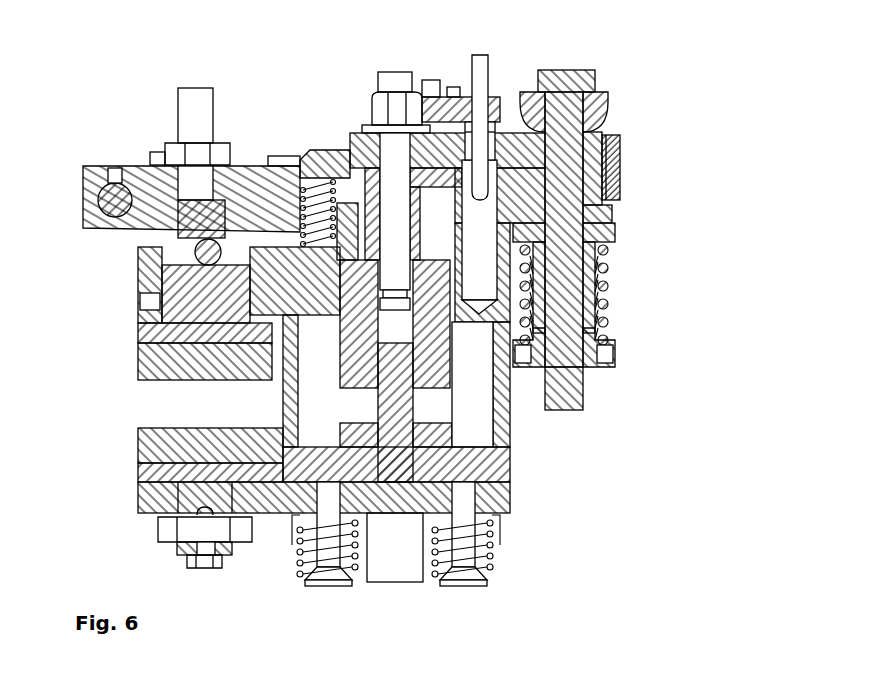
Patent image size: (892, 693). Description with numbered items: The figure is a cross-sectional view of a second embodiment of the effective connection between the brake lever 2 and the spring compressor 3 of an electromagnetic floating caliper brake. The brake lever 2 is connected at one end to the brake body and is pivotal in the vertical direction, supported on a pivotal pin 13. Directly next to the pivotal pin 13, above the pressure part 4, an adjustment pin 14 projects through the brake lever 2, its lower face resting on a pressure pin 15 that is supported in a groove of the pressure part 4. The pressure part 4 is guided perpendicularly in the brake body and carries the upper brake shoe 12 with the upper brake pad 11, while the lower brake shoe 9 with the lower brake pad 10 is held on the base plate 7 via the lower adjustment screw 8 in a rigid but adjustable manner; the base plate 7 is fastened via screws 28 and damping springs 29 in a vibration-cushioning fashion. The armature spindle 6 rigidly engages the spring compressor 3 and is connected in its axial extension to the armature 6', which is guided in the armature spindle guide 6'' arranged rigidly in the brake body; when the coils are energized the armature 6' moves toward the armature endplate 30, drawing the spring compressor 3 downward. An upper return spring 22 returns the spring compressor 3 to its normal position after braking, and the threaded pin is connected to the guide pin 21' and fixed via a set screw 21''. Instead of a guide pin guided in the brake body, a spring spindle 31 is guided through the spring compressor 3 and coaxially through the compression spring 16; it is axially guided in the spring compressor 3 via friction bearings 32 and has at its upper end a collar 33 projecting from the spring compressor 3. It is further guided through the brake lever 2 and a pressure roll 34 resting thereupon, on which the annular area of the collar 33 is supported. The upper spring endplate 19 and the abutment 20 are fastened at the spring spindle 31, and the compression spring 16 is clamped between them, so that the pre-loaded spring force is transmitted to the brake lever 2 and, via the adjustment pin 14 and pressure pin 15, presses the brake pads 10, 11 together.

The brake lever 2 is at (612, 158).
The spring compressor 3 is at (598, 178).
The pressure part 4 is at (180, 285).
The armature spindle 6 is at (382, 165).
The armature 6' is at (238, 324).
The armature spindle guide 6'' is at (224, 462).
The base plate 7 is at (753, 528).
The lower adjustment screw 8 is at (190, 493).
The lower brake shoe 9 is at (148, 472).
The lower brake pad 10 is at (157, 442).
The upper brake pad 11 is at (165, 362).
The upper brake shoe 12 is at (157, 333).
The pivotal pin 13 is at (112, 200).
The adjustment pin 14 is at (190, 105).
The pressure pin 15 is at (207, 255).
The compression spring 16 is at (600, 306).
The upper spring endplate 19 is at (614, 230).
The lower abutment 20 is at (613, 342).
The guide pin 21' is at (505, 110).
The set screw 21'' is at (451, 74).
The upper return spring 22 is at (318, 187).
The screws 28 is at (330, 570).
The damping springs 29 is at (357, 553).
The armature endplate 30 is at (611, 396).
The spring spindle 31 is at (570, 393).
The friction bearings 32 is at (586, 212).
The collar 33 is at (570, 72).
The pressure roll 34 is at (604, 96).